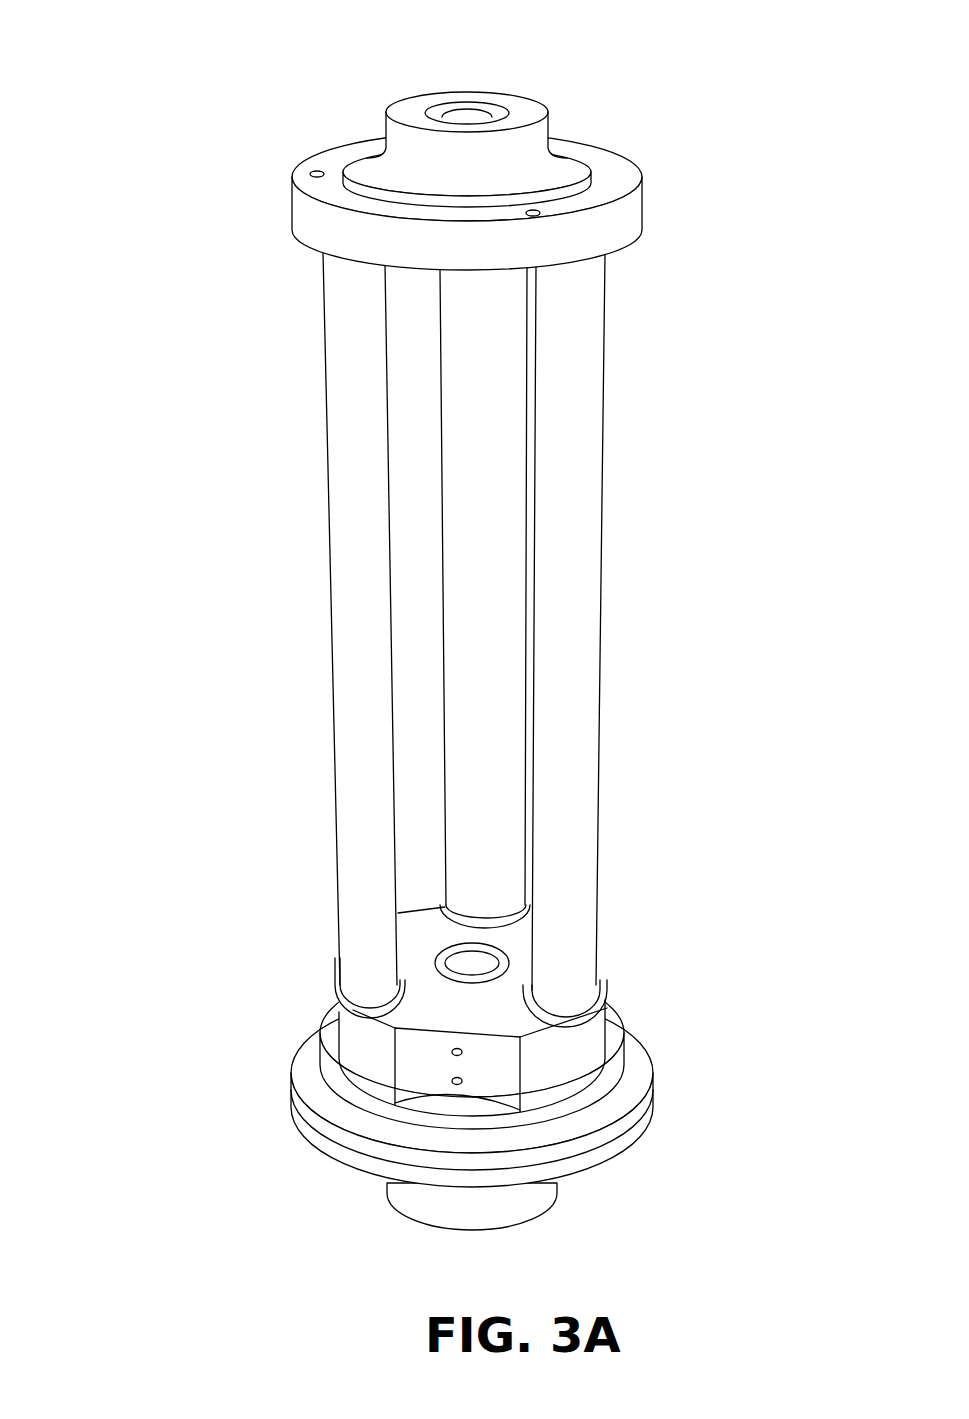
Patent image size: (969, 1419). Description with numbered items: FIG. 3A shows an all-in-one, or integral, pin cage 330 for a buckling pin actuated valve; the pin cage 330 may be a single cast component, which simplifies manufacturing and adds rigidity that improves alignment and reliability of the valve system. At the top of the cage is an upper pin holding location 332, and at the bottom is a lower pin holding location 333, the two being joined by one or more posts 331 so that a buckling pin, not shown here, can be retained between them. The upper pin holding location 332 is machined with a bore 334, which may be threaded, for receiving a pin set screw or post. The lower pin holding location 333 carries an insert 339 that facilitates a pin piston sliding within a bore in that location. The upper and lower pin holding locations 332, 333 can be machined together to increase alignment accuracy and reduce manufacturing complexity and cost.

The all-in-one pin cage 330 is at (290, 283).
The post 331 is at (585, 275).
The upper pin holding location 332 is at (527, 98).
The lower pin holding location 333 is at (353, 1008).
The bore 334 is at (460, 102).
The insert 339 is at (483, 943).